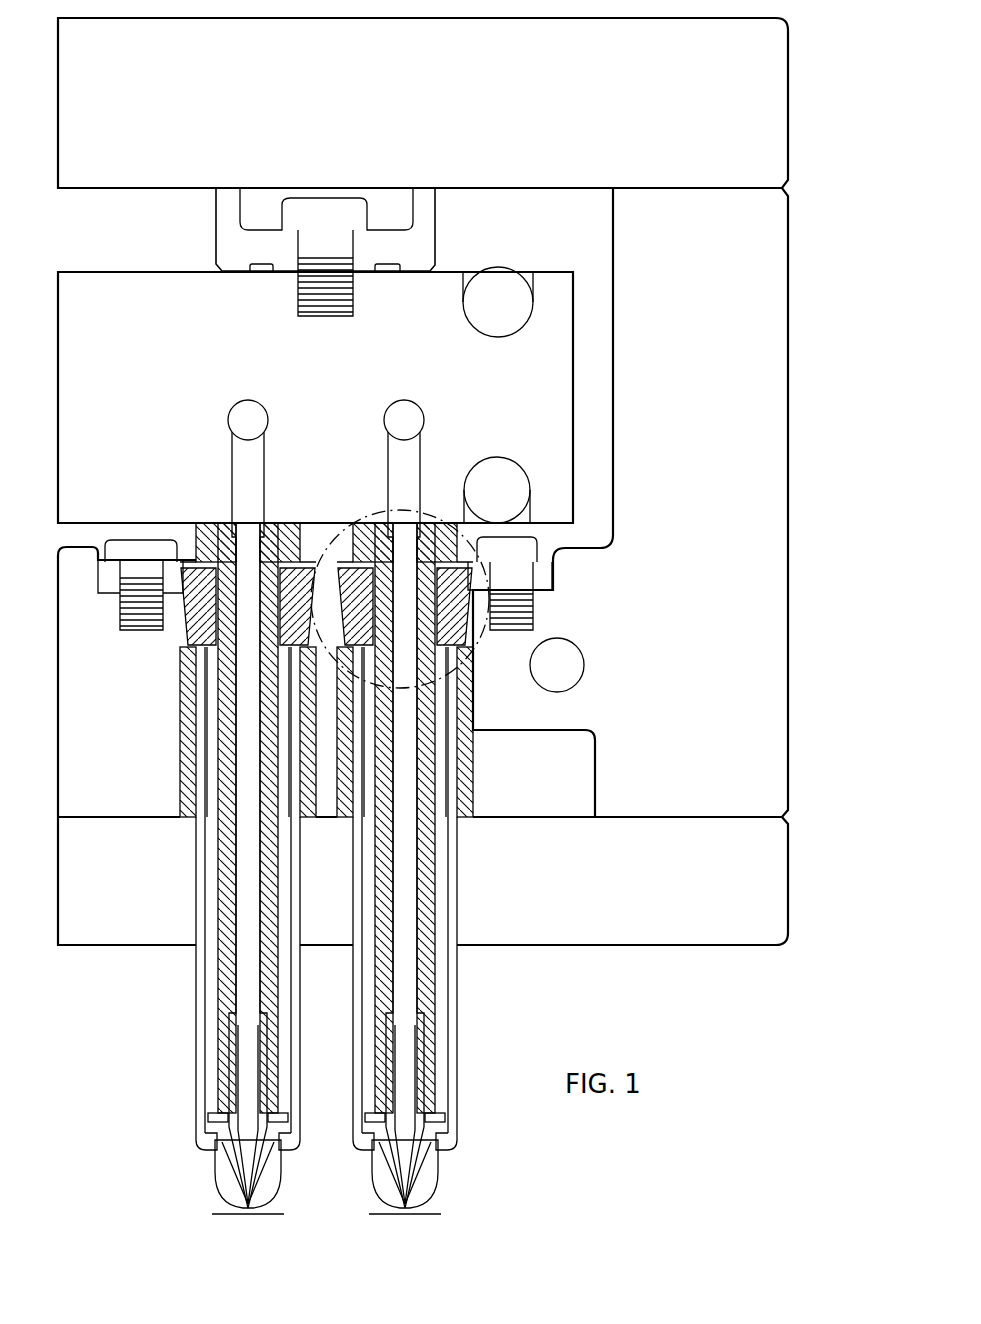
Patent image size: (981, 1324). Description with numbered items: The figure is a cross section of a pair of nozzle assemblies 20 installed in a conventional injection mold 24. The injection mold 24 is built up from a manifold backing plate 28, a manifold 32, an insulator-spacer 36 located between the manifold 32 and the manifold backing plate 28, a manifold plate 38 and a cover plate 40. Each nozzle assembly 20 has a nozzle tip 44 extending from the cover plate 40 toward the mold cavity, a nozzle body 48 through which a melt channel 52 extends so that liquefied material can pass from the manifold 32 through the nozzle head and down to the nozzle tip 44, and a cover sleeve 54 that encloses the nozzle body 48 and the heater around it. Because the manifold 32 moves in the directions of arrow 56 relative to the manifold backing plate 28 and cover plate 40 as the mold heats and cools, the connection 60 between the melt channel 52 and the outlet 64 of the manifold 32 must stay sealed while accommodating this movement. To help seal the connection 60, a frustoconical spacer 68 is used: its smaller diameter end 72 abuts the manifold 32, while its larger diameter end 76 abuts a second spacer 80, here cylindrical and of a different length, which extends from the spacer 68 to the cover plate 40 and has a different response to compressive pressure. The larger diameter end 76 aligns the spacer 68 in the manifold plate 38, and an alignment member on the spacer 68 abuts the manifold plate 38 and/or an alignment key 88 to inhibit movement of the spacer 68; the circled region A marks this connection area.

The nozzle assembly 20 is at (188, 870).
The injection mold 24 is at (810, 470).
The manifold backing plate 28 is at (432, 112).
The manifold 32 is at (134, 340).
The insulator-spacer 36 is at (437, 227).
The manifold plate 38 is at (712, 307).
The cover plate 40 is at (565, 875).
The nozzle tip 44 is at (228, 1180).
The nozzle body 48 is at (223, 773).
The melt channel 52 is at (243, 679).
The cover sleeve 54 is at (207, 748).
The arrow 56 is at (443, 374).
The connection 60 is at (246, 518).
The outlet 64 is at (242, 448).
The frustoconical spacer 68 is at (197, 533).
The smaller diameter end 72 is at (280, 525).
The larger diameter end 76 is at (183, 650).
The second spacer 80 is at (205, 712).
The alignment key 88 is at (530, 552).
The detail region A is at (482, 628).